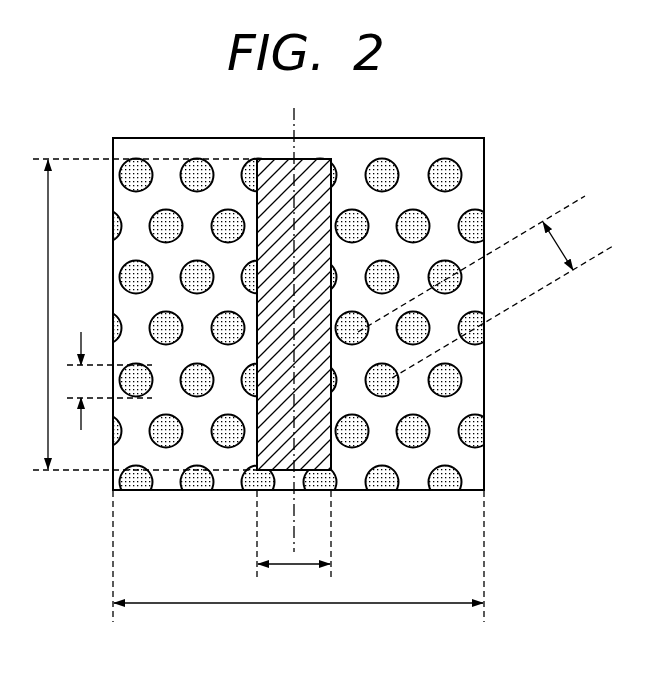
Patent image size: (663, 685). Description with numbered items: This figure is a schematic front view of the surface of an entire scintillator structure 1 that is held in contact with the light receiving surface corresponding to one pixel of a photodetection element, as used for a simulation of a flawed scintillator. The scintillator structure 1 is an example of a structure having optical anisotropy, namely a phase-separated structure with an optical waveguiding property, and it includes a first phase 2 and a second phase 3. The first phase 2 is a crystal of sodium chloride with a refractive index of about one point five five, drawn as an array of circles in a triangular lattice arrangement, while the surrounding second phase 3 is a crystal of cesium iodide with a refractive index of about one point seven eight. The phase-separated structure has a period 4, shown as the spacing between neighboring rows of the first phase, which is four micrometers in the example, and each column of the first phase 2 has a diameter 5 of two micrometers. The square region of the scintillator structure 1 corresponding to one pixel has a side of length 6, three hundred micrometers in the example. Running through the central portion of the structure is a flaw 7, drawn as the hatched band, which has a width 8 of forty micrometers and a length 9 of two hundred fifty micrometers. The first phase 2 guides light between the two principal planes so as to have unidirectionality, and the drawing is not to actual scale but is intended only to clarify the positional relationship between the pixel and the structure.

The scintillator structure 1 is at (478, 138).
The first phase 2 is at (413, 438).
The second phase 3 is at (443, 450).
The period 4 is at (485, 287).
The diameter 5 is at (106, 381).
The length 6 is at (298, 565).
The flaw 7 is at (315, 442).
The width 8 is at (294, 543).
The length 9 is at (141, 314).